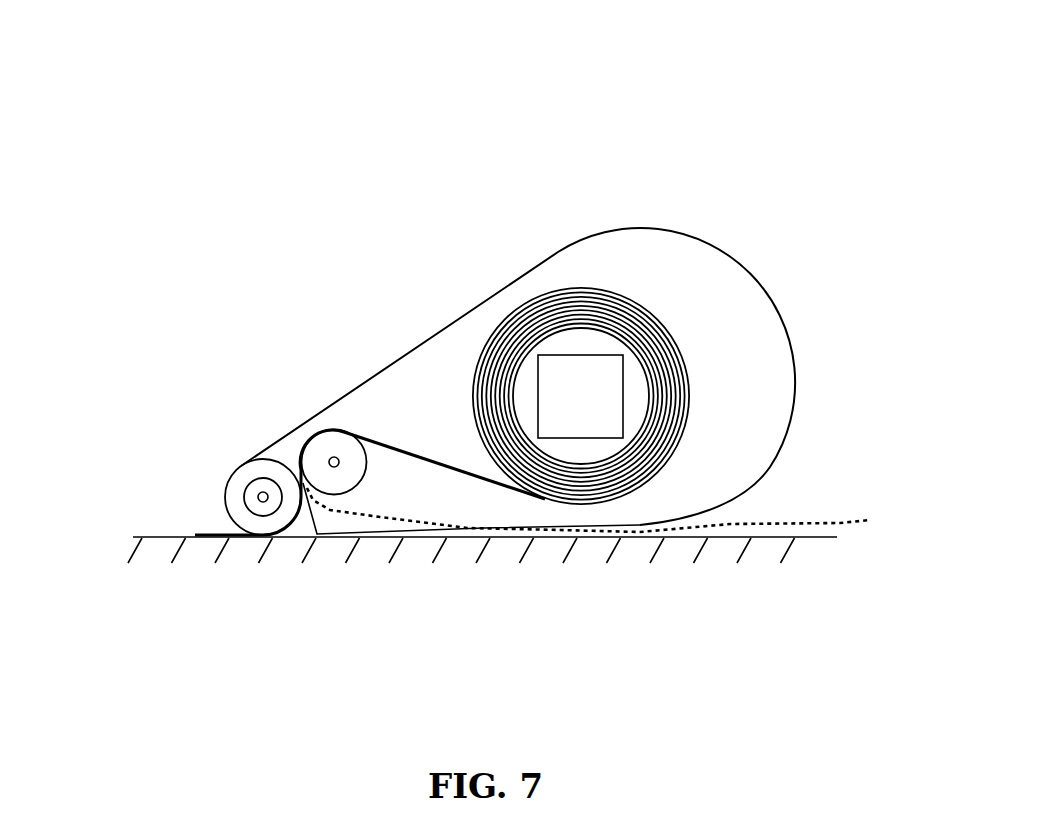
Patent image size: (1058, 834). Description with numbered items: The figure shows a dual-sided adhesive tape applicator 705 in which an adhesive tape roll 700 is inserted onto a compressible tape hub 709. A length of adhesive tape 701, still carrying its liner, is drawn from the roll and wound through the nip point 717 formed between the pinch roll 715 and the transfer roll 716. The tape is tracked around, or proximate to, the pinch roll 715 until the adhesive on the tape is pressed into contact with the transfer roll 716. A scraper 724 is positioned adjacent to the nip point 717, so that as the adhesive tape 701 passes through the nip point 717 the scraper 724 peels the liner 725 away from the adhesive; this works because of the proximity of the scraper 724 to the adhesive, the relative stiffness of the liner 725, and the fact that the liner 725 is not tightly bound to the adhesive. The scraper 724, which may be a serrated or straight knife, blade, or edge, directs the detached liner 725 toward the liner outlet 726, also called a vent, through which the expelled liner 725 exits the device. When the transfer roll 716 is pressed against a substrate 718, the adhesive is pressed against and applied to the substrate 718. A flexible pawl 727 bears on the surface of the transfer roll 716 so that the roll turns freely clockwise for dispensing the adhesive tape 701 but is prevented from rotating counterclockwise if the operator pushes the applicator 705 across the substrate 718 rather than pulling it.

The dual-sided adhesive tape applicator 705 is at (652, 75).
The compressible tape hub 709 is at (572, 372).
The adhesive tape roll 700 is at (675, 418).
The adhesive tape 701 is at (407, 447).
The pinch roll 715 is at (340, 443).
The transfer roll 716 is at (235, 495).
The nip point 717 is at (295, 441).
The substrate 718 is at (140, 537).
The scraper 724 is at (315, 537).
The liner 725 is at (760, 528).
The liner outlet 726 is at (468, 544).
The flexible pawl 727 is at (288, 442).